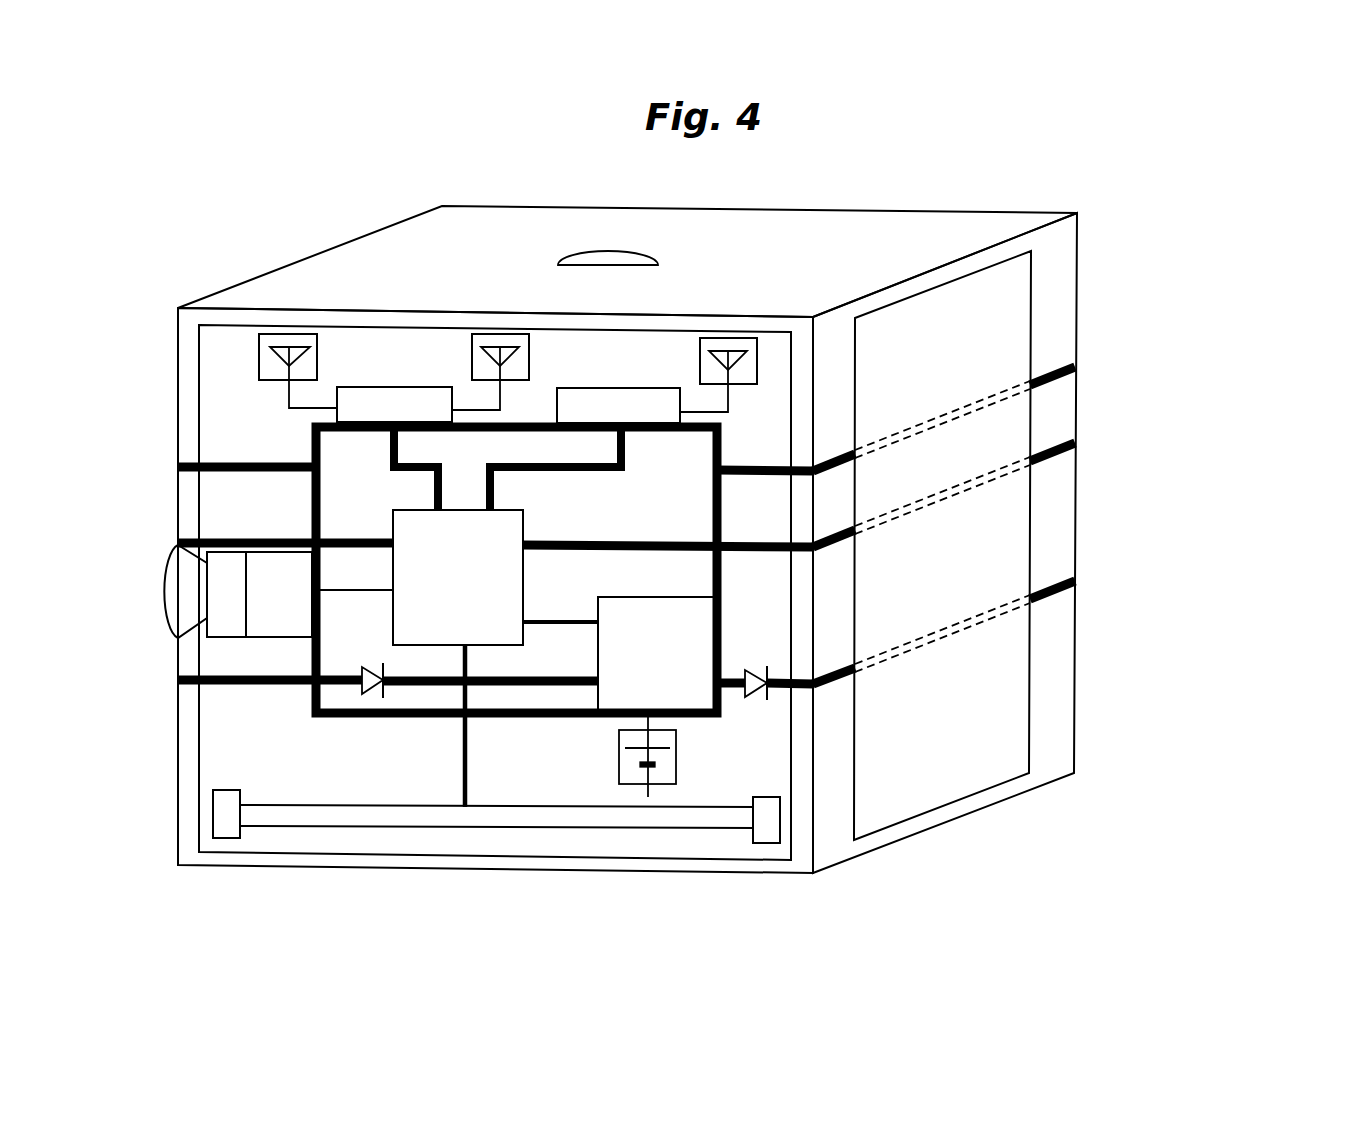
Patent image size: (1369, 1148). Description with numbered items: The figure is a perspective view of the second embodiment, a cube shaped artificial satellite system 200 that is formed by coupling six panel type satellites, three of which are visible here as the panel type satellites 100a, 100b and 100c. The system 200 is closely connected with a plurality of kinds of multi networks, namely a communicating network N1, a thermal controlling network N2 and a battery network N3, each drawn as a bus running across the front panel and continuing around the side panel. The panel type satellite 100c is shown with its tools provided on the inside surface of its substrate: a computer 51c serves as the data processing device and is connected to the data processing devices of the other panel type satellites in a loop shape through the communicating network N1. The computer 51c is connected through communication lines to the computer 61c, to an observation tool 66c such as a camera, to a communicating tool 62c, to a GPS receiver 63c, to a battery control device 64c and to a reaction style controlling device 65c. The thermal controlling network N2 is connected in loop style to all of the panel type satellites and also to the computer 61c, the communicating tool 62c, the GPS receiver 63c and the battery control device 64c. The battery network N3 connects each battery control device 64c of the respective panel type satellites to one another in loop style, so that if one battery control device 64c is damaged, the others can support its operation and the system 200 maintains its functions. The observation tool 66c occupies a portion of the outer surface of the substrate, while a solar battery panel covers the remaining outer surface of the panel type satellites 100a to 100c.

The cube shaped artificial satellite system 200 is at (1133, 313).
The panel type satellite 100a is at (833, 224).
The panel type satellite 100b is at (1075, 703).
The panel type satellite 100c is at (176, 862).
The communicating network N1 is at (1077, 445).
The thermal controlling network N2 is at (1077, 366).
The battery network N3 is at (1075, 582).
The computer 51c is at (523, 568).
The computer 61c is at (272, 562).
The communicating tool 62c is at (384, 394).
The GPS receiver 63c is at (626, 394).
The battery control device 64c is at (630, 597).
The reaction style controlling device 65c is at (437, 810).
The observation tool 66c is at (185, 597).